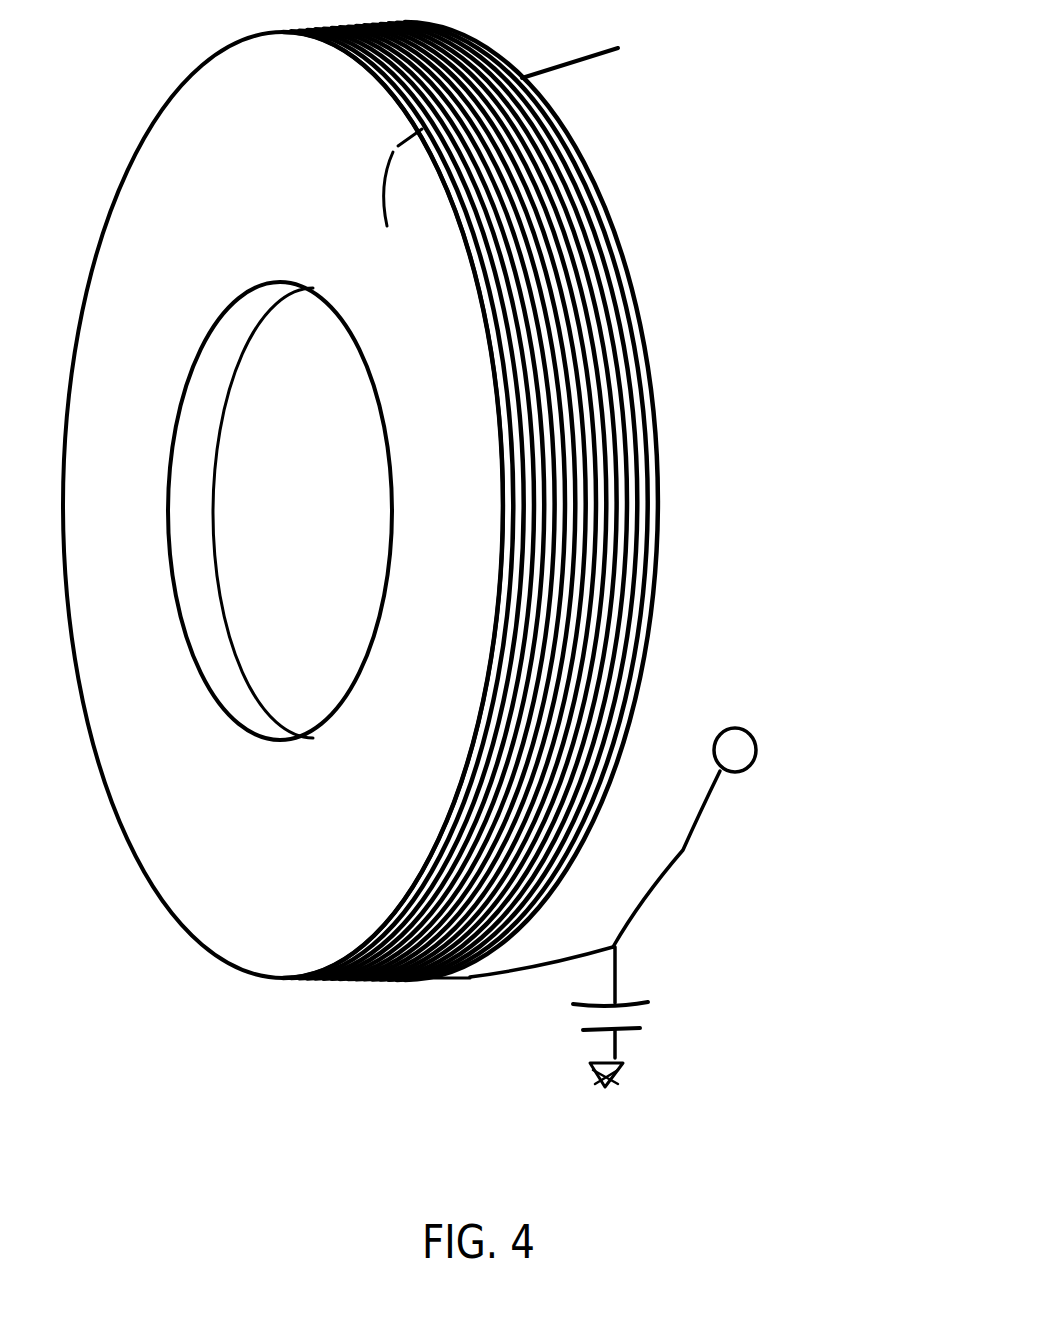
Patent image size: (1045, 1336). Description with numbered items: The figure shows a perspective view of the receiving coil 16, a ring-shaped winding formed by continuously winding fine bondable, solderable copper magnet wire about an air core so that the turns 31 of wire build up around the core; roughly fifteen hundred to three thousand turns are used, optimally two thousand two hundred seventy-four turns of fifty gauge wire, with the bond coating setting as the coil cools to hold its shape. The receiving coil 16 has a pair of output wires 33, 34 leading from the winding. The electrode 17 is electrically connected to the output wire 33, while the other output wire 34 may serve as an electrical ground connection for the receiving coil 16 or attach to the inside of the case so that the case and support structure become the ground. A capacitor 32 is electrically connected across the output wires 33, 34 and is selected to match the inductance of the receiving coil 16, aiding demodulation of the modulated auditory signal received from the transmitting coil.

The receiving coil 16 is at (636, 321).
The electrode 17 is at (757, 732).
The turns 31 is at (363, 983).
The capacitor 32 is at (637, 992).
The output wire 33 is at (615, 1057).
The output wire 34 is at (688, 855).